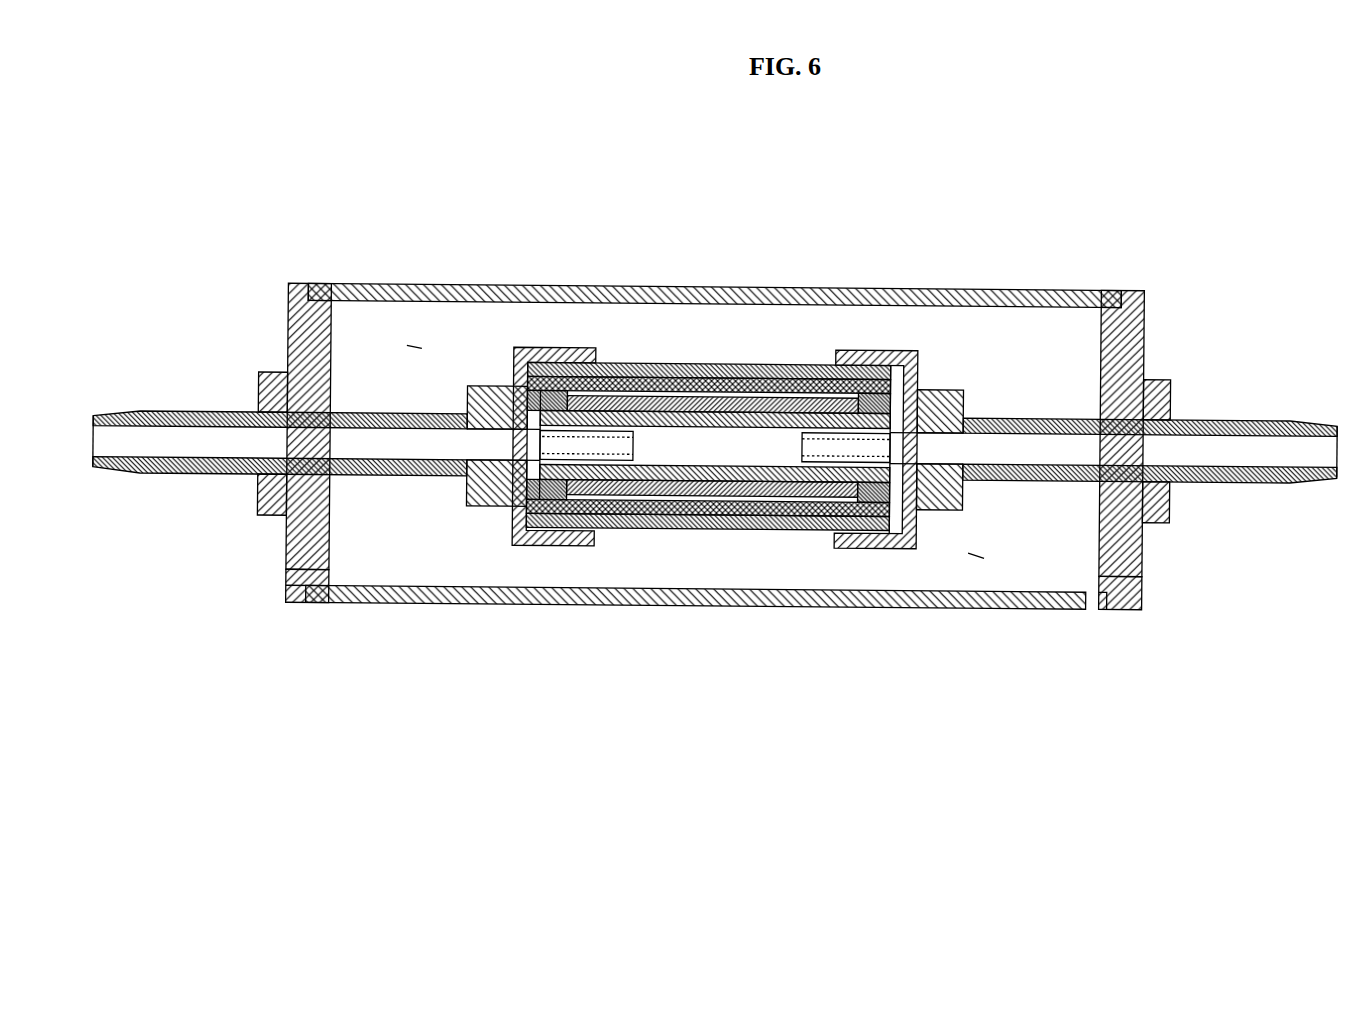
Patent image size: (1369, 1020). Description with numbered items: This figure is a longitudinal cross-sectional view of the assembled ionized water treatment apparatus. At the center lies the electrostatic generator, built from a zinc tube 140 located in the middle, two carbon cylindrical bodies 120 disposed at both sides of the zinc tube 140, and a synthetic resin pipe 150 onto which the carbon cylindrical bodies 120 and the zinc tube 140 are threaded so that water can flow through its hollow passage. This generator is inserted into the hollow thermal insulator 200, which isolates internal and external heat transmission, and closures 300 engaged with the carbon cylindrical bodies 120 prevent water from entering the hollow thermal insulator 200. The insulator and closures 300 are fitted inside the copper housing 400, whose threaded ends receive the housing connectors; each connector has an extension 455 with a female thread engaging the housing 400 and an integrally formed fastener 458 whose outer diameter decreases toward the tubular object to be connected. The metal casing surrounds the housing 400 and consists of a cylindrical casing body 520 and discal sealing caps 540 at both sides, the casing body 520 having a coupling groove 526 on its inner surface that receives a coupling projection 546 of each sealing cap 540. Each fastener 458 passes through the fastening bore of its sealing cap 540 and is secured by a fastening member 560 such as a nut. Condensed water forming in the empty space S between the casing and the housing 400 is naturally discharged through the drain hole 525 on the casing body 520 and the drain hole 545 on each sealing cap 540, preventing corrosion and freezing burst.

The carbon cylindrical body 120 is at (630, 367).
The zinc tube 140 is at (730, 533).
The pipe 150 is at (738, 400).
The hollow thermal insulator 200 is at (775, 533).
The closure 300 is at (562, 350).
The housing 400 is at (658, 533).
The extension 455 is at (533, 546).
The fastener 458 is at (187, 474).
The casing body 520 is at (962, 293).
The drain hole 525 is at (1087, 607).
The coupling groove 526 is at (219, 621).
The sealing cap 540 is at (288, 317).
The drain hole 545 is at (1143, 578).
The coupling projection 546 is at (287, 588).
The fastening member 560 is at (260, 393).
The empty space S is at (413, 352).